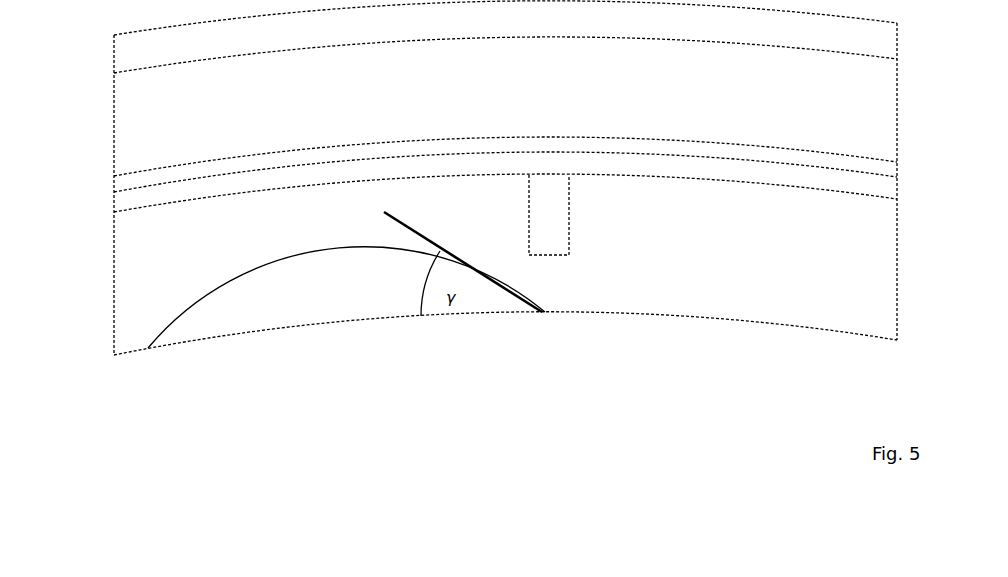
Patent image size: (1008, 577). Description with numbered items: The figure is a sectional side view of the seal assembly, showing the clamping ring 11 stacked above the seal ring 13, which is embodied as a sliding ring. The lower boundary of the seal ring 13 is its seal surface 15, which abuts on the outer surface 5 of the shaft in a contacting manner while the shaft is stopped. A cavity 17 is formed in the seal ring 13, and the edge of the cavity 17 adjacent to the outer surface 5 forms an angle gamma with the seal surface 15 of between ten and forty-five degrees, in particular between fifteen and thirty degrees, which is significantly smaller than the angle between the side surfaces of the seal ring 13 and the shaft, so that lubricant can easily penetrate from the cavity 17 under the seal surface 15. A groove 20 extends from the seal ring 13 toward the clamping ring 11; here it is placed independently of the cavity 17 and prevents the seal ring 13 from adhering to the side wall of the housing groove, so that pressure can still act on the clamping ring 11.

The outer surface 5 is at (349, 318).
The clamping ring 11 is at (137, 113).
The seal ring 13 is at (133, 241).
The seal surface 15 is at (737, 320).
The cavity 17 is at (180, 336).
The groove 20 is at (558, 245).